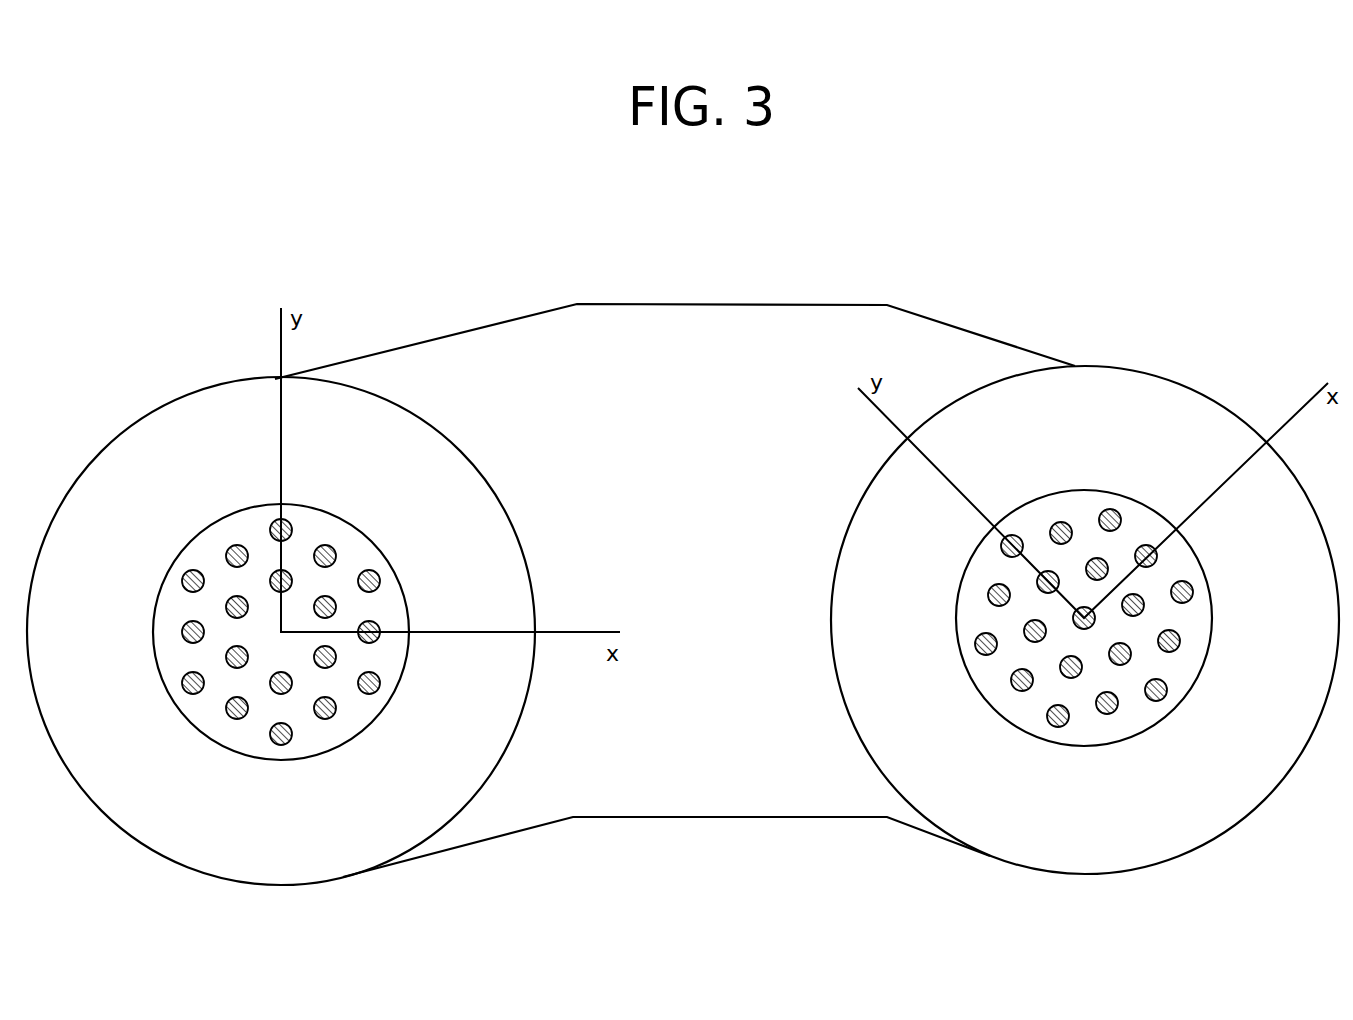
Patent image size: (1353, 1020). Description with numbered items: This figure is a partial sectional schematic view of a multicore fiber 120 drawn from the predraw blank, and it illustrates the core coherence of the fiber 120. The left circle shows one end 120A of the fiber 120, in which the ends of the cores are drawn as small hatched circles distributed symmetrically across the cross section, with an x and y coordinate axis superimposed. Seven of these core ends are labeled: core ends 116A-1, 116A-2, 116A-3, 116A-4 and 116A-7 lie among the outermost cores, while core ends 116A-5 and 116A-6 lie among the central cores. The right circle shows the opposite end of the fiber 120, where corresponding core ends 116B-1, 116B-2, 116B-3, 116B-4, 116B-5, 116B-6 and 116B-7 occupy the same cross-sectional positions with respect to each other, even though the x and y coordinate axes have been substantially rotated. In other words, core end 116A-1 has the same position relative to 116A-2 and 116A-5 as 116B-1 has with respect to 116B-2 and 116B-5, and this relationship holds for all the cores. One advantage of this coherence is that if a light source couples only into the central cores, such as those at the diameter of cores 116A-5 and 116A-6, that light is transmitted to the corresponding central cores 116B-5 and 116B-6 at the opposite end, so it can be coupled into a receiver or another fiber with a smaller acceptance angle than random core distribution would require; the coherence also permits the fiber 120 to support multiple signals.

The fiber 120 is at (702, 304).
The end of the fiber 120A is at (118, 433).
The core end 116A-1 is at (287, 520).
The core end 116A-2 is at (330, 547).
The core end 116A-3 is at (375, 573).
The core end 116A-4 is at (228, 551).
The core end 116A-5 is at (277, 572).
The core end 116A-6 is at (336, 607).
The core end 116A-7 is at (378, 640).
The core end 116B-1 is at (1013, 536).
The core end 116B-2 is at (1068, 524).
The core end 116B-3 is at (1117, 511).
The core end 116B-4 is at (988, 593).
The core end 116B-5 is at (1038, 579).
The core end 116B-6 is at (1107, 561).
The core end 116B-7 is at (1159, 559).